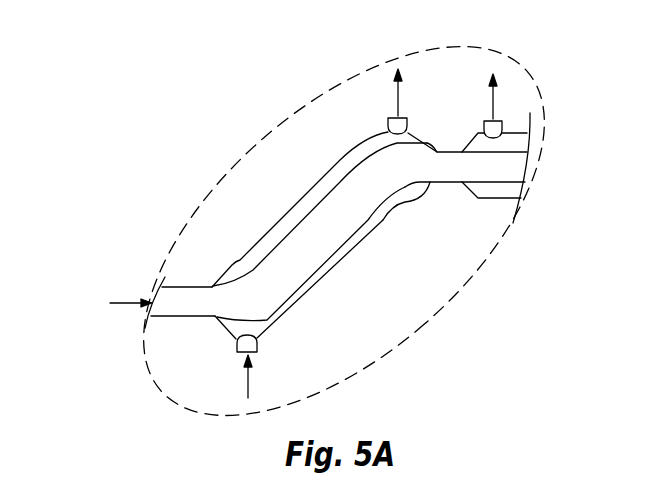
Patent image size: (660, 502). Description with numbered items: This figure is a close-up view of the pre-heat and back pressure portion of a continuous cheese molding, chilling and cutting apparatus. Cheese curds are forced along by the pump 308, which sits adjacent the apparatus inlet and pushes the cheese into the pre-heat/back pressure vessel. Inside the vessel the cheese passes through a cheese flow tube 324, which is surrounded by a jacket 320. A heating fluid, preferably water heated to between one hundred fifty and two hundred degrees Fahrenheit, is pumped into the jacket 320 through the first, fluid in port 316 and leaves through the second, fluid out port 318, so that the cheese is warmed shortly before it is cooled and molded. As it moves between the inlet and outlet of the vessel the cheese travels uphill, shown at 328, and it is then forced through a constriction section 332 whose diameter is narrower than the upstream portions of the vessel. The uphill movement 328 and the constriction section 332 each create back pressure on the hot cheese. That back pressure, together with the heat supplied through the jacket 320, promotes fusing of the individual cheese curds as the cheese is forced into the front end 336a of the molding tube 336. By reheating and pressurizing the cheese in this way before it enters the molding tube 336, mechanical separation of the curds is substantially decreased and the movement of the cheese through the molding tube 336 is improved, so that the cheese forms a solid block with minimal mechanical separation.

The pump 308 is at (180, 283).
The first, fluid in port 316 is at (258, 345).
The second, fluid out port 318 is at (406, 118).
The jacket 320 is at (290, 212).
The cheese flow tube 324 is at (360, 230).
The uphill travel section 328 is at (317, 257).
The constriction section 332 is at (429, 170).
The molding tube 336 is at (533, 165).
The front end of the molding tube 336a is at (517, 132).